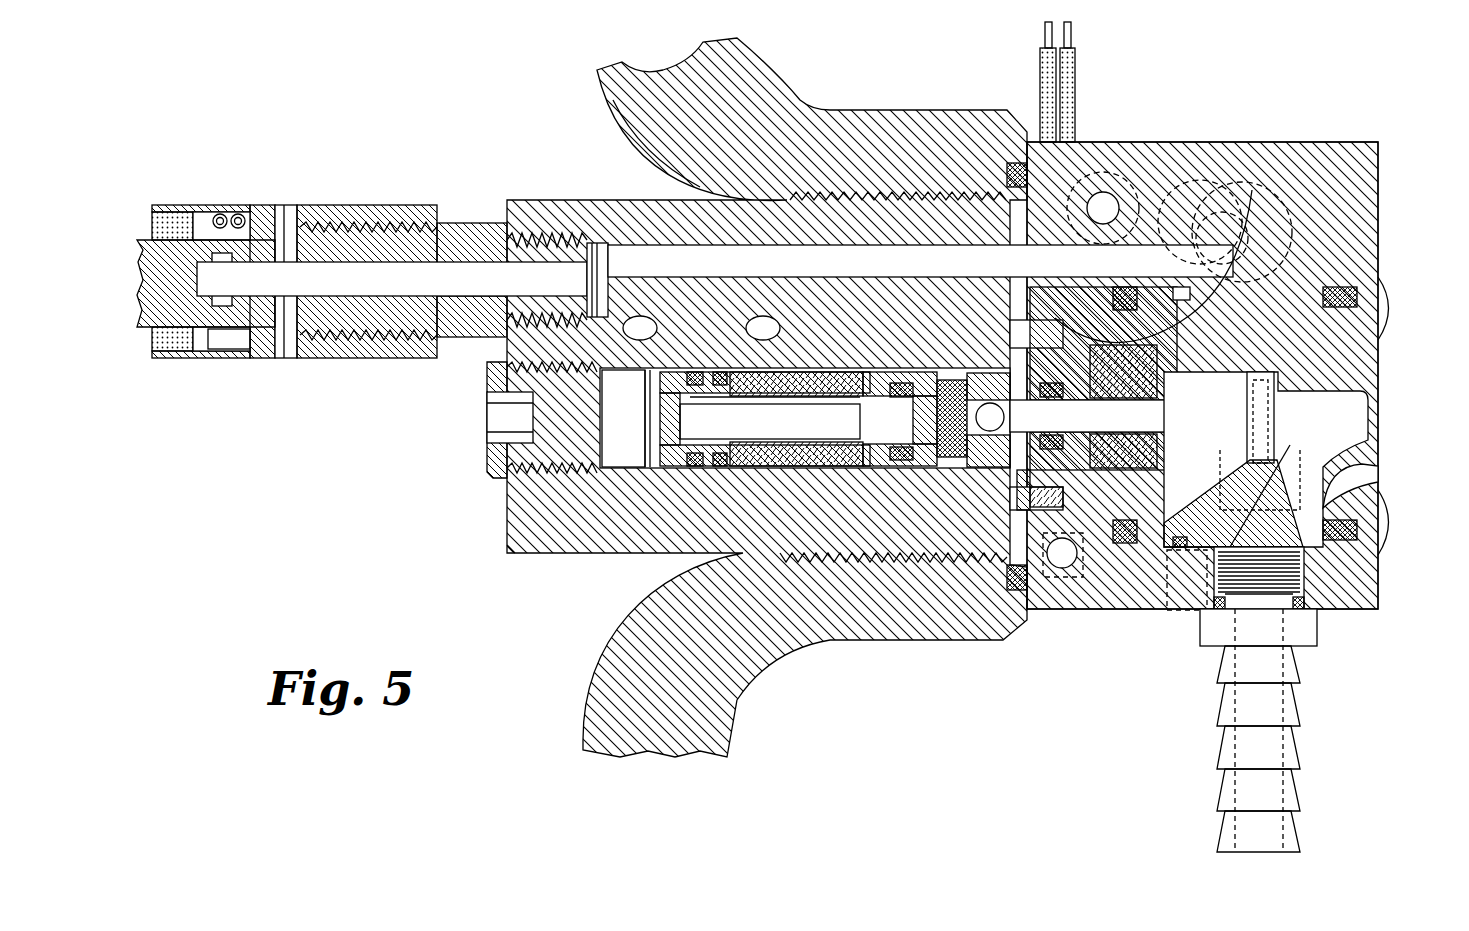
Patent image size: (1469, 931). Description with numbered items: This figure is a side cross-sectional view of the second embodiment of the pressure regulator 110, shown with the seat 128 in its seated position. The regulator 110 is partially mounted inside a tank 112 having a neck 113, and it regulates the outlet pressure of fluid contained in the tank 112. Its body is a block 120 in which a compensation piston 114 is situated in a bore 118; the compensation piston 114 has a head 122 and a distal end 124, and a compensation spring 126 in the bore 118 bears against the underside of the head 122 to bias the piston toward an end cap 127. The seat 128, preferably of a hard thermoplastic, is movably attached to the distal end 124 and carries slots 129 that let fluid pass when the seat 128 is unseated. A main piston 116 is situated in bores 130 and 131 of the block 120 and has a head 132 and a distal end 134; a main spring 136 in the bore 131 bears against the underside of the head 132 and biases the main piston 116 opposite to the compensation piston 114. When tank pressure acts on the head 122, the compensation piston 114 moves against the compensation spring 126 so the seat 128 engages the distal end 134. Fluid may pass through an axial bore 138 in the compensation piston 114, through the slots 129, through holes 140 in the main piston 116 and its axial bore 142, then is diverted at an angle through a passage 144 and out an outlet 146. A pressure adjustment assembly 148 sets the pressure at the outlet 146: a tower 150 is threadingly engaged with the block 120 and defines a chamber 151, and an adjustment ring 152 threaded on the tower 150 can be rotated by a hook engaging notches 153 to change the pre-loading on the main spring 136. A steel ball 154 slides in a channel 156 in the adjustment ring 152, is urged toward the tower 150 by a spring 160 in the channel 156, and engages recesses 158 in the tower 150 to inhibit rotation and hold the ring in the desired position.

The pressure regulator 110 is at (1410, 132).
The tank 112 is at (738, 42).
The neck 113 is at (920, 110).
The compensation piston 114 is at (690, 445).
The main piston 116 is at (990, 450).
The bore 118 is at (820, 370).
The block 120 is at (518, 560).
The head 122 is at (655, 430).
The distal end 124 is at (905, 365).
The compensation spring 126 is at (815, 470).
The end cap 127 is at (487, 472).
The seat 128 is at (925, 455).
The slots 129 is at (895, 465).
The bore 130 is at (1085, 470).
The bore 131 is at (1100, 560).
The head 132 is at (1300, 330).
The distal end 134 is at (965, 370).
The main spring 136 is at (1270, 330).
The axial bore 138 is at (660, 382).
The holes 140 is at (958, 450).
The axial bore 142 is at (1215, 360).
The passage 144 is at (1318, 432).
The outlet 146 is at (1259, 611).
The pressure adjustment assembly 148 is at (1150, 365).
The tower 150 is at (1060, 330).
The chamber 151 is at (1028, 375).
The adjustment ring 152 is at (1085, 345).
The notches 153 is at (1190, 370).
The steel ball 154 is at (1015, 485).
The channel 156 is at (1035, 500).
The recesses 158 is at (1062, 327).
The spring 160 is at (1052, 475).